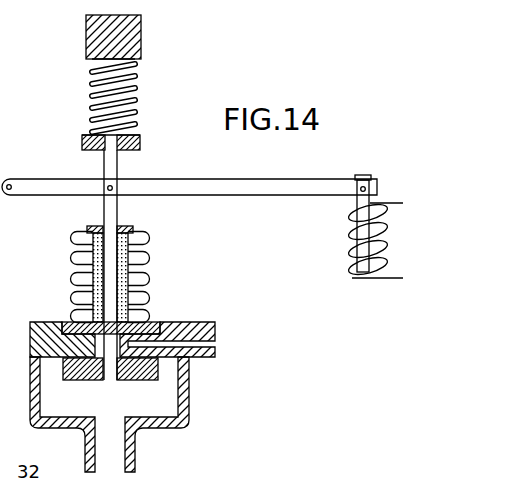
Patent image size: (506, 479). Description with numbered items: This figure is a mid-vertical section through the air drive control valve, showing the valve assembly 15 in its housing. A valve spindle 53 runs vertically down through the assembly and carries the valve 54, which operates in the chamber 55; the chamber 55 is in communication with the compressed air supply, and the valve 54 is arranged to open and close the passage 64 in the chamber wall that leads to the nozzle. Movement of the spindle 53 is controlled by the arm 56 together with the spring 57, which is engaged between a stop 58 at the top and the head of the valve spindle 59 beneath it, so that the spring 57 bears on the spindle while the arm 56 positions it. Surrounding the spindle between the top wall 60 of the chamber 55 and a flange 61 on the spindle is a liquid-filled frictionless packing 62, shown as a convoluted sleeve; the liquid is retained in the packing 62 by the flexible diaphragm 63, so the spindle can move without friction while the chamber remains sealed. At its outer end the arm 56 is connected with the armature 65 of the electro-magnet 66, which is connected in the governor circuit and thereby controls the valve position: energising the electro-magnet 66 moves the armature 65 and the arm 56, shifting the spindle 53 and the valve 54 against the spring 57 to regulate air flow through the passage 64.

The stop 58 is at (142, 47).
The spring 57 is at (140, 85).
The head of the valve spindle 59 is at (141, 141).
The valve spindle 53 is at (112, 212).
The arm 56 is at (258, 196).
The armature 65 is at (360, 214).
The electro-magnet 66 is at (352, 270).
The flange 61 is at (135, 230).
The liquid-filled frictionless packing 62 is at (148, 282).
The flexible diaphragm 63 is at (150, 325).
The top wall 60 is at (44, 320).
The passage 64 is at (218, 344).
The valve 54 is at (160, 368).
The chamber 55 is at (166, 404).
The housing 15 is at (190, 418).